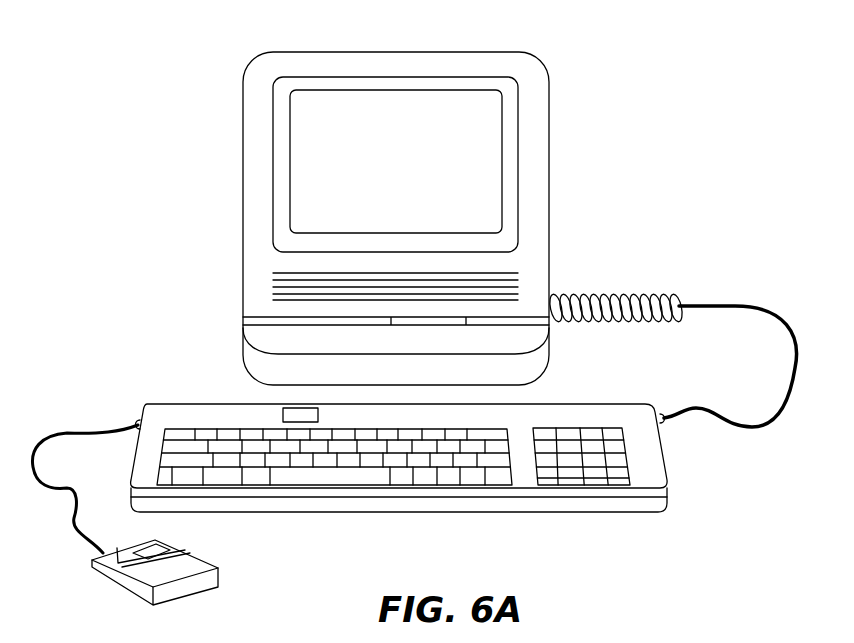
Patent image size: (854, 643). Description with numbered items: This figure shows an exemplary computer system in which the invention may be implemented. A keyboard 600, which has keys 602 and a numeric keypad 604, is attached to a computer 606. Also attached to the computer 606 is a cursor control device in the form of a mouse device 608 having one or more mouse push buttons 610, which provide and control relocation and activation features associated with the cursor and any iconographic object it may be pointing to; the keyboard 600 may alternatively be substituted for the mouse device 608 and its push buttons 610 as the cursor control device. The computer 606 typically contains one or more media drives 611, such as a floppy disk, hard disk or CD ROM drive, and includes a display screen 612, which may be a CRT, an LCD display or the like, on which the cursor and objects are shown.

The keyboard 600 is at (655, 467).
The keys 602 is at (420, 473).
The numeric keypad 604 is at (595, 475).
The computer 606 is at (549, 119).
The mouse device 608 is at (203, 590).
The mouse push button 610 is at (134, 554).
The media drive 611 is at (421, 322).
The display screen 612 is at (438, 110).